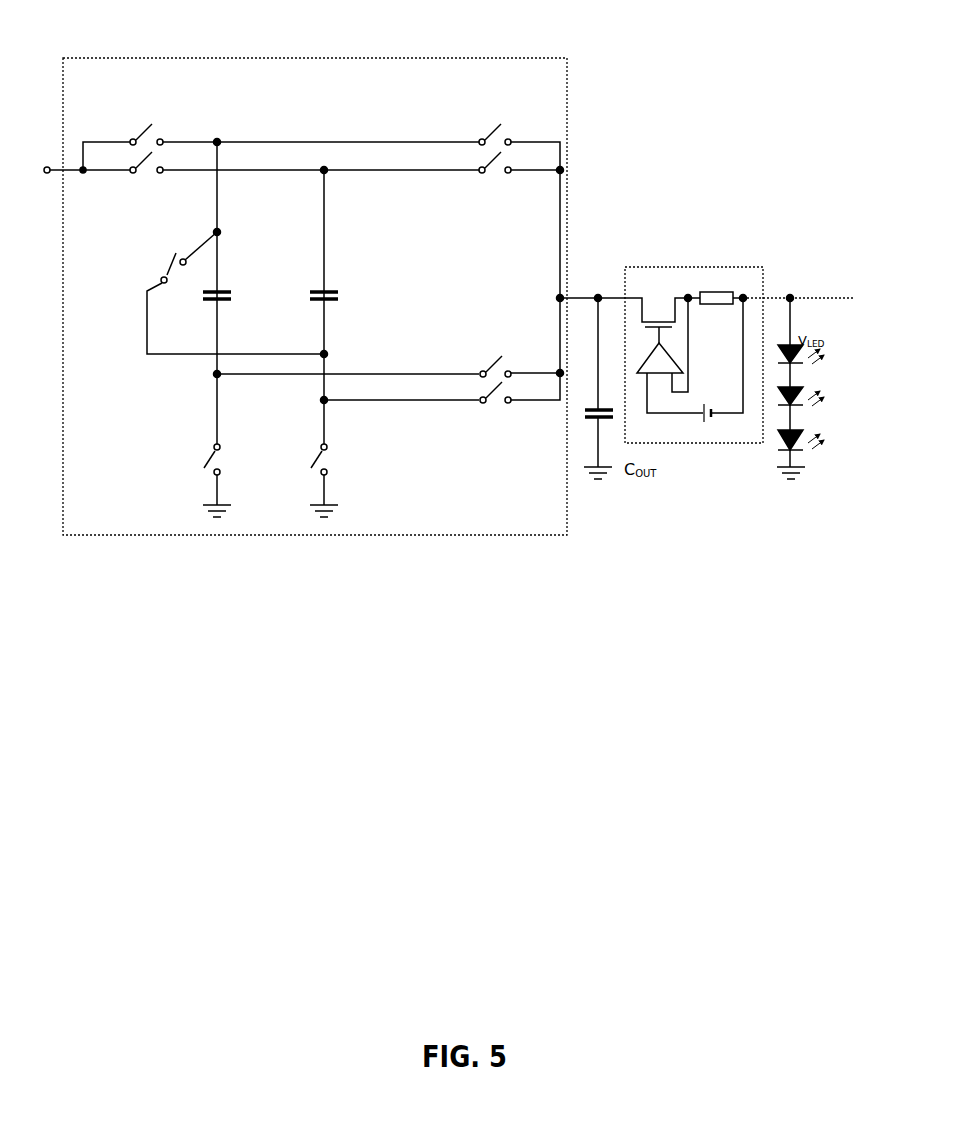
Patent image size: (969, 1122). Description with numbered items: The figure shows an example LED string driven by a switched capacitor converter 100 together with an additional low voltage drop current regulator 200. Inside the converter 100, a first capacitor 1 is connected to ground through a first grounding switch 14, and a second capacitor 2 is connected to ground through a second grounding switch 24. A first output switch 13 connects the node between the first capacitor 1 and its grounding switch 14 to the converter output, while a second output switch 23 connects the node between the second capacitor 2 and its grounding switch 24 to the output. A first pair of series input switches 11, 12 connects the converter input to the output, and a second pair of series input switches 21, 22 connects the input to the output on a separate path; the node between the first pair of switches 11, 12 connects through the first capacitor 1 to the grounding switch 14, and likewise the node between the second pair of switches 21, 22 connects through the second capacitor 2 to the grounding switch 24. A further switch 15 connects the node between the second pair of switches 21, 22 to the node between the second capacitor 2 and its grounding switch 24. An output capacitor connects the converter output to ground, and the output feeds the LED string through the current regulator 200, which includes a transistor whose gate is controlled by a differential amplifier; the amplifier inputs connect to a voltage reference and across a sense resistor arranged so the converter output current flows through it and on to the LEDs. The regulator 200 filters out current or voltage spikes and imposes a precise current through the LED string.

The SC converter 100 is at (145, 55).
The current regulator 200 is at (680, 263).
The switch S11 11 is at (133, 134).
The switch S21 21 is at (133, 162).
The switch S12 12 is at (481, 134).
The switch S22 22 is at (481, 162).
The switch S13 13 is at (481, 366).
The switch S23 23 is at (481, 392).
The switch S14 14 is at (225, 459).
The switch S24 24 is at (332, 459).
The switch S15 15 is at (172, 280).
The capacitor C1 1 is at (220, 285).
The capacitor C2 2 is at (328, 285).